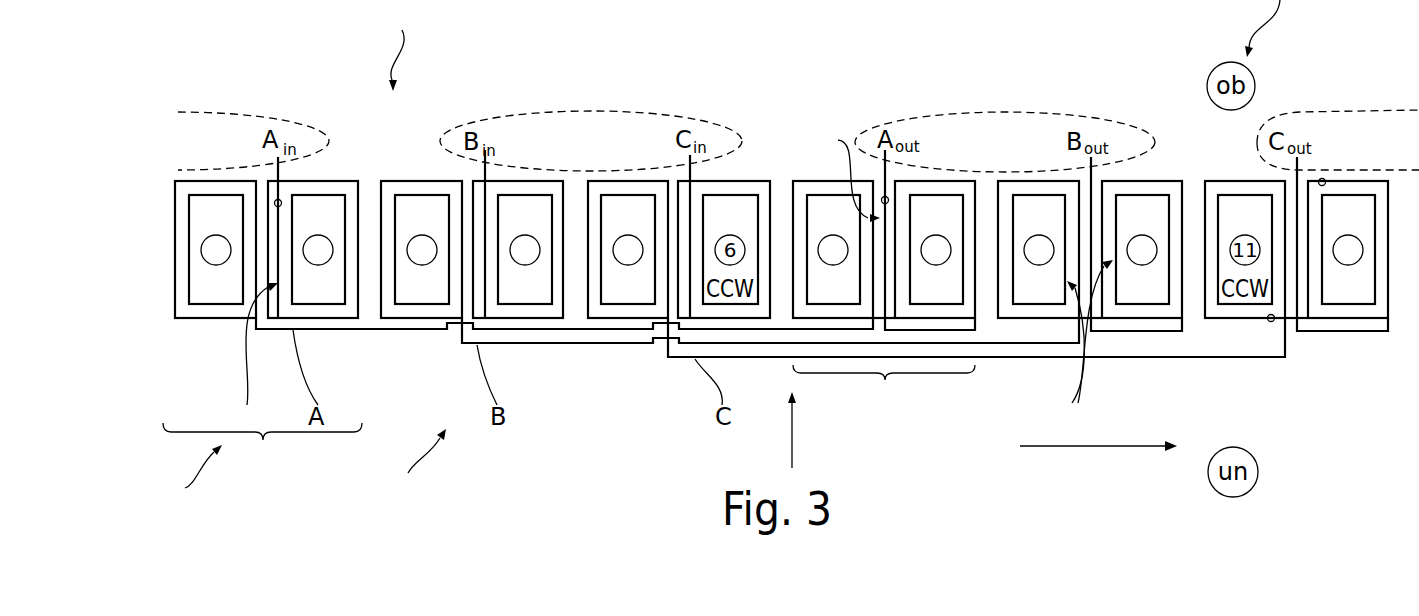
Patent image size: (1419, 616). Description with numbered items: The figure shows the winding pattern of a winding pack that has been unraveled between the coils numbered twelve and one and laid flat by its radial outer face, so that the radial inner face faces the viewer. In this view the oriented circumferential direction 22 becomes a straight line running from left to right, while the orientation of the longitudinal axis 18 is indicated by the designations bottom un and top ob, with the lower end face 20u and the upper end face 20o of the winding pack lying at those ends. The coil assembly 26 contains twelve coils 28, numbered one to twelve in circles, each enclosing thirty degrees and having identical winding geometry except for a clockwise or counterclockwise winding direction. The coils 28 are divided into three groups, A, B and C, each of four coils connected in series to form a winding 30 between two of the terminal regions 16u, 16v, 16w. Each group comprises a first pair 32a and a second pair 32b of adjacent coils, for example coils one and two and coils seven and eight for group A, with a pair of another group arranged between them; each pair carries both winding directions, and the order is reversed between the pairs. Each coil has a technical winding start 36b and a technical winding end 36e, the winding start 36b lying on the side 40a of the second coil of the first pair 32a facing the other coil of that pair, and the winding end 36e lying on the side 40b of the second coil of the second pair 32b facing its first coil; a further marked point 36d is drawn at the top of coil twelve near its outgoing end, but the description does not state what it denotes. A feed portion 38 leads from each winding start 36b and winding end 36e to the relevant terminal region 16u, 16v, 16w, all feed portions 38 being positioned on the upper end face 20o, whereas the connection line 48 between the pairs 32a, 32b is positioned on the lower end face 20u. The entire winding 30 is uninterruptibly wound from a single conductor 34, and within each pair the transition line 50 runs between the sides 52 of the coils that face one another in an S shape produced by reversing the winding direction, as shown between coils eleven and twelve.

The terminal region 16u is at (245, 113).
The terminal region 16v is at (570, 112).
The terminal region 16w is at (1000, 112).
The longitudinal axis 18 is at (792, 425).
The upper end face 20o is at (399, 48).
The lower end face 20u is at (418, 465).
The circumferential direction 22 is at (1095, 447).
The coil assembly 26 is at (188, 473).
The coil 28 is at (520, 320).
The winding 30 is at (405, 181).
The first pair 32a is at (265, 440).
The second pair 32b is at (884, 297).
The conductor 34 is at (1152, 181).
The winding start 36b is at (282, 203).
The connection point 36d is at (1323, 182).
The winding end 36e is at (888, 200).
The feed portion 38 is at (277, 170).
The side 40a is at (246, 357).
The side 40b is at (834, 173).
The connection line 48 is at (433, 331).
The transition line 50 is at (1103, 307).
The side 52 is at (1084, 345).